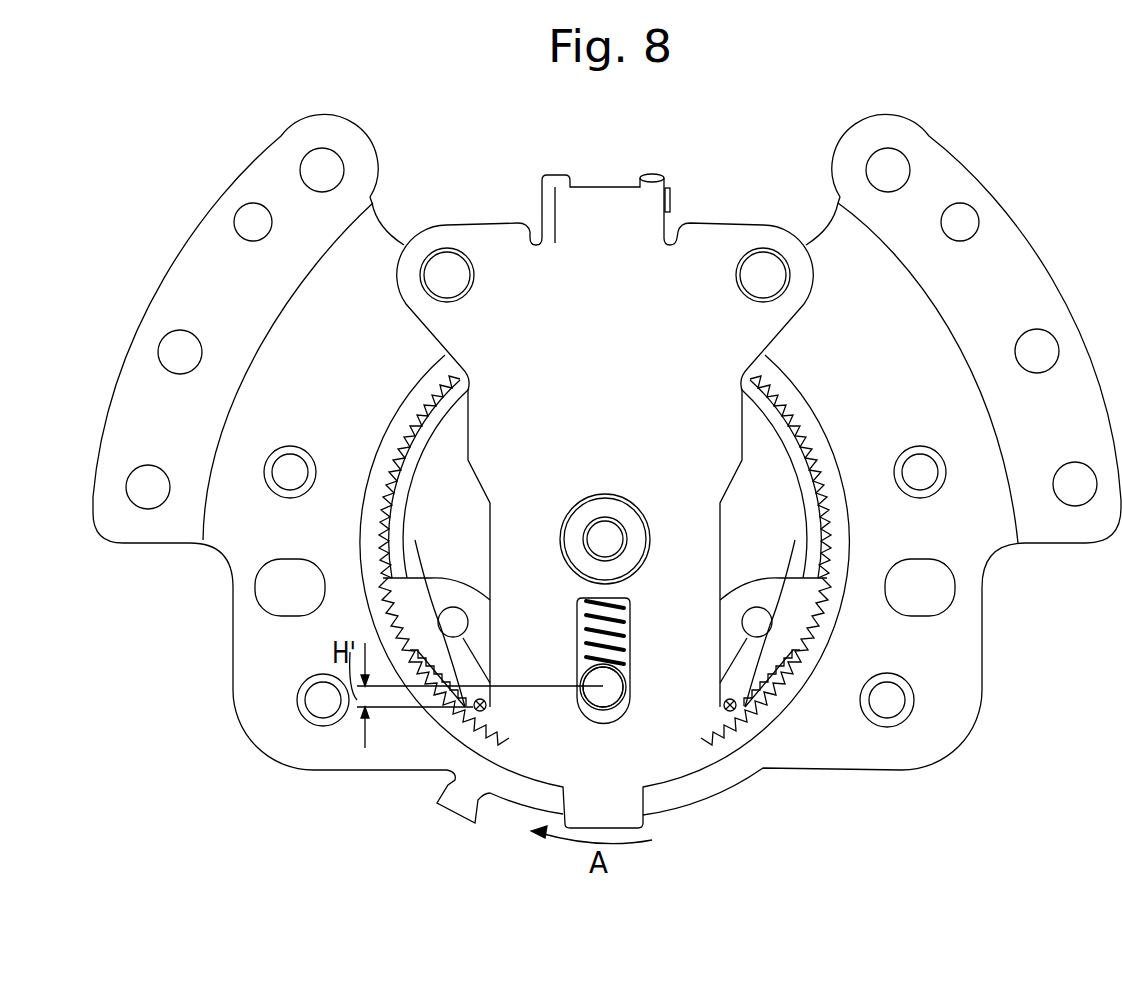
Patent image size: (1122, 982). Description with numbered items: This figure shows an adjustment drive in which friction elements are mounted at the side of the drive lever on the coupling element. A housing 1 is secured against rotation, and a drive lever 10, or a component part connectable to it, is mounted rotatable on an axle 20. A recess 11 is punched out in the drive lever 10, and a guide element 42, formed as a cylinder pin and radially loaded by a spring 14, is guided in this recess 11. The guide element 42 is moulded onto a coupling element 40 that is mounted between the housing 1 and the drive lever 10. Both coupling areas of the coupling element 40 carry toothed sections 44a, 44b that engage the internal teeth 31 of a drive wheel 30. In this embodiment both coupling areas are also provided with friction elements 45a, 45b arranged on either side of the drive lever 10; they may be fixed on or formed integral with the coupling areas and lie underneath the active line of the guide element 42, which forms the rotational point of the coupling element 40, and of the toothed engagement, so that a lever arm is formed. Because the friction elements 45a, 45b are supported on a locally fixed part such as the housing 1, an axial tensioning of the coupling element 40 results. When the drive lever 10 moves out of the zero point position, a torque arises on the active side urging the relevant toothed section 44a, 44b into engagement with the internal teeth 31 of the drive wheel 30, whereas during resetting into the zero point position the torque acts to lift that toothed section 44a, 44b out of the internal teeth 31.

The housing 1 is at (957, 642).
The drive lever 10 is at (620, 807).
The recess 11 is at (632, 620).
The spring 14 is at (622, 647).
The axle 20 is at (605, 537).
The drive wheel 30 is at (735, 737).
The internal teeth 31 is at (470, 722).
The coupling element 40 is at (753, 672).
The guide element 42 is at (590, 688).
The toothed section 44a is at (812, 632).
The toothed section 44b is at (370, 613).
The friction element 45a is at (750, 715).
The friction element 45b is at (478, 708).